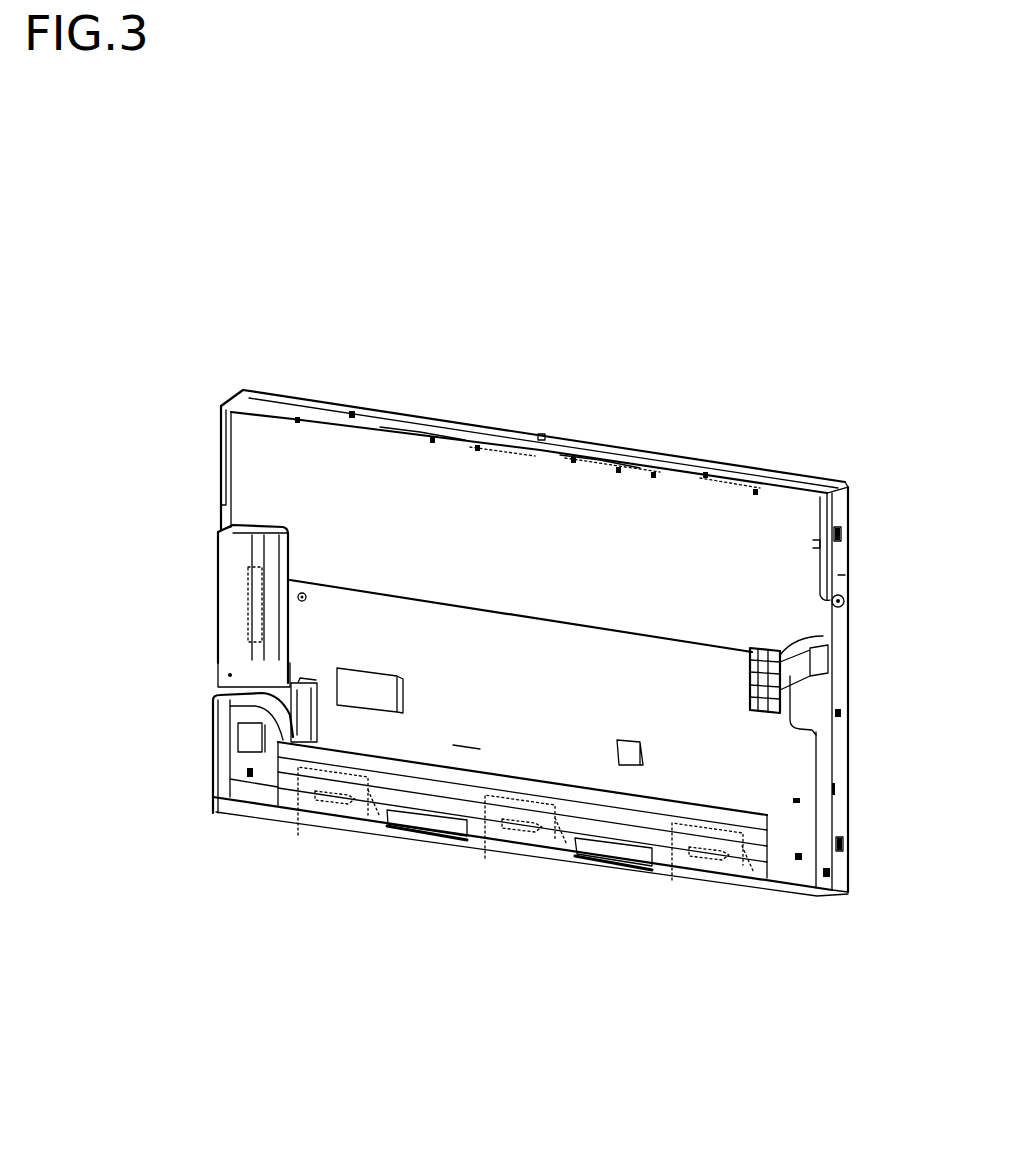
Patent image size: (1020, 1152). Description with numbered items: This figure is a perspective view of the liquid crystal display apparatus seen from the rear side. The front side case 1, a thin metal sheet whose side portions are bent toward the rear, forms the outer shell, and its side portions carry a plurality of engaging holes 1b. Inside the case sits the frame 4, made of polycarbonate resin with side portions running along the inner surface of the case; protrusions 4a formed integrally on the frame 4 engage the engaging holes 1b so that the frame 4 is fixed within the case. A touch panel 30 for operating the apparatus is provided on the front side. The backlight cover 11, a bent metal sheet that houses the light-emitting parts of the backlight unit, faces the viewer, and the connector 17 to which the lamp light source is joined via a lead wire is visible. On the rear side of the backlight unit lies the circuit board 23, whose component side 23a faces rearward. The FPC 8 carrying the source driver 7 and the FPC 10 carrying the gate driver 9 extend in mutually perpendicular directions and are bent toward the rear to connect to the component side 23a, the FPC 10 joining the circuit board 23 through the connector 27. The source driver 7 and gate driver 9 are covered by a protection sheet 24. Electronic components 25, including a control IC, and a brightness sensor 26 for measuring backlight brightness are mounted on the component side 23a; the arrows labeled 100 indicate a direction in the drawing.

The front side case 1 is at (758, 476).
The engaging holes 1b is at (541, 437).
The frame 4 is at (835, 763).
The protrusions 4a is at (350, 412).
The source driver 7 is at (335, 812).
The flexible printed circuit (FPC) 8 is at (377, 825).
The gate driver 9 is at (255, 577).
The FPC 10 is at (230, 675).
The backlight cover 11 is at (269, 438).
The connector 17 is at (767, 652).
The circuit board 23 is at (455, 746).
The component side 23a is at (483, 756).
The protection sheet 24 is at (237, 631).
The electronic components 25 is at (388, 700).
The brightness sensor 26 is at (242, 745).
The connector 27 is at (304, 745).
The touch panel 30 is at (823, 478).
The insertion direction 100 is at (185, 721).